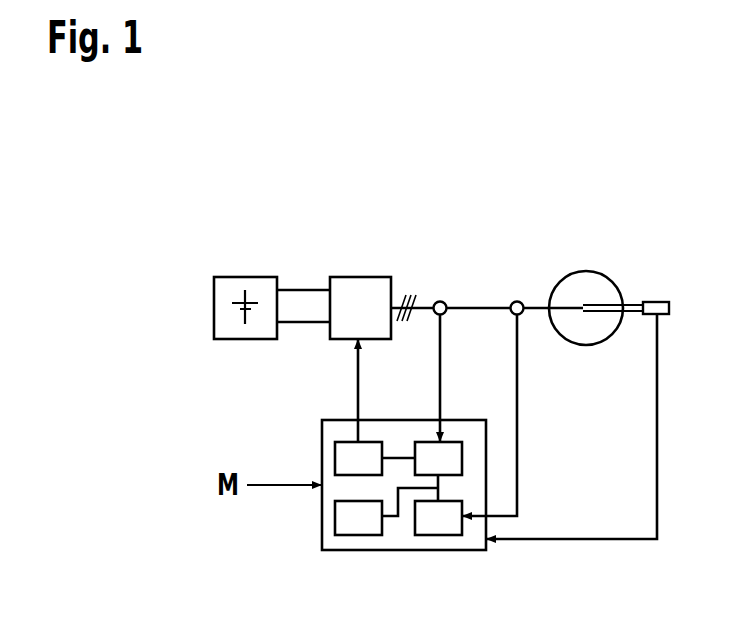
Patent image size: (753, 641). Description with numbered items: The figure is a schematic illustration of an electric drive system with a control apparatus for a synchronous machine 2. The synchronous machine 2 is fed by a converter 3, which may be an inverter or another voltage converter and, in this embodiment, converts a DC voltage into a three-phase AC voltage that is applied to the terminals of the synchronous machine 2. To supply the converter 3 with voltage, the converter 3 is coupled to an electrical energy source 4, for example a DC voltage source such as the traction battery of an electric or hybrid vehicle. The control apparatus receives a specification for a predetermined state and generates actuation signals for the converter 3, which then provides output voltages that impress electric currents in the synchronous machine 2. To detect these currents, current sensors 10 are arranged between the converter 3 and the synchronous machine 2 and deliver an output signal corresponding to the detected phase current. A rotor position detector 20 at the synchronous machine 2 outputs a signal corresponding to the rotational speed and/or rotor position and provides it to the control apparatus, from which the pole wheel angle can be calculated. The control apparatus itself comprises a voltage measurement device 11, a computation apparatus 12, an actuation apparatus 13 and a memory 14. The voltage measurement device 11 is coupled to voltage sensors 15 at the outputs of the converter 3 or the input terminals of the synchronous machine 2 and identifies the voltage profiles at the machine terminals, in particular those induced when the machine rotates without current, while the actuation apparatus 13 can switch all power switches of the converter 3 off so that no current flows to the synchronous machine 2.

The synchronous machine 2 is at (585, 271).
The converter 3 is at (360, 277).
The electrical energy source 4 is at (246, 277).
The current sensors 10 is at (440, 301).
The voltage measurement device 11 is at (437, 535).
The computation apparatus 12 is at (420, 442).
The actuation apparatus 13 is at (337, 442).
The memory 14 is at (360, 535).
The voltage sensors 15 is at (517, 301).
The rotor position detector 20 is at (656, 302).